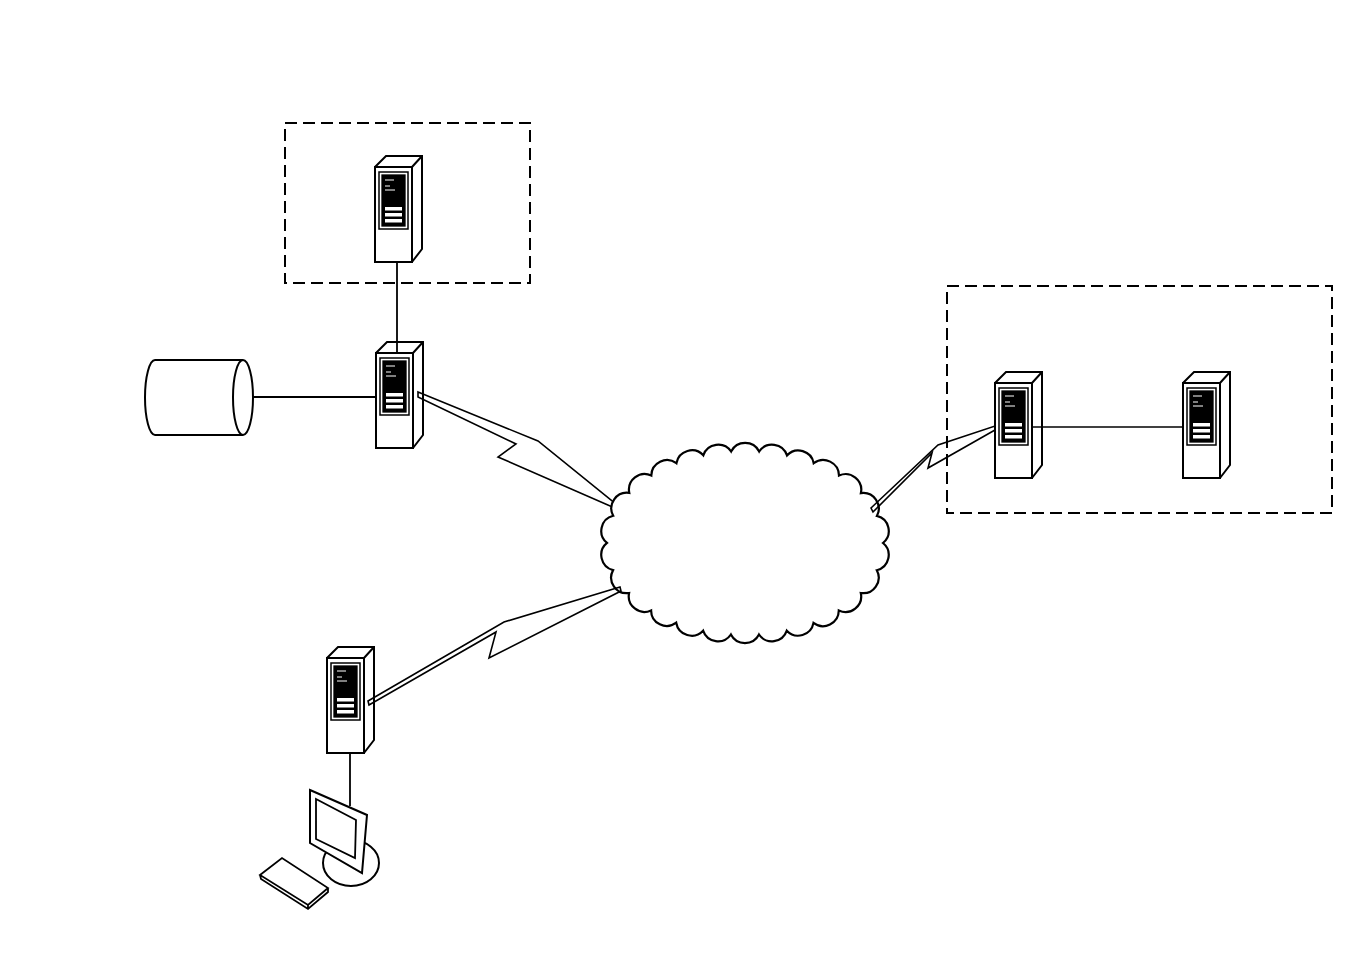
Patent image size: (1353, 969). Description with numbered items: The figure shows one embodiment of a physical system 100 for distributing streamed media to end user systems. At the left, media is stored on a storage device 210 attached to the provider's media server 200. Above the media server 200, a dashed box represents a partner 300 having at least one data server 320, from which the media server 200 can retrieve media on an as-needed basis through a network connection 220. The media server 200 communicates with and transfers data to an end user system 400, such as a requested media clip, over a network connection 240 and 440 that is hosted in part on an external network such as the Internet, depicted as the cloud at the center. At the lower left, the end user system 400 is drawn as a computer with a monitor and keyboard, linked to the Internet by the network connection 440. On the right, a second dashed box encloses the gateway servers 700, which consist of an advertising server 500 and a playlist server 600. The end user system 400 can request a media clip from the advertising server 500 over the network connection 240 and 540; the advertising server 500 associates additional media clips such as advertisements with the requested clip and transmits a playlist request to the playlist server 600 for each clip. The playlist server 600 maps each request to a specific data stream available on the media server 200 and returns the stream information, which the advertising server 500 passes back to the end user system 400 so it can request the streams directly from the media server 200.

The physical system 100 is at (234, 91).
The media server 200 is at (428, 370).
The storage device 210 is at (200, 354).
The network connection 220 is at (412, 307).
The network connection 240 is at (538, 436).
The partner 300 is at (407, 187).
The server 320 is at (422, 209).
The end user system 400 is at (320, 676).
The network connection 440 is at (518, 670).
The advertising server 500 is at (1052, 372).
The network connection 540 is at (926, 500).
The playlist server 600 is at (1237, 372).
The gateway servers 700 is at (1139, 385).